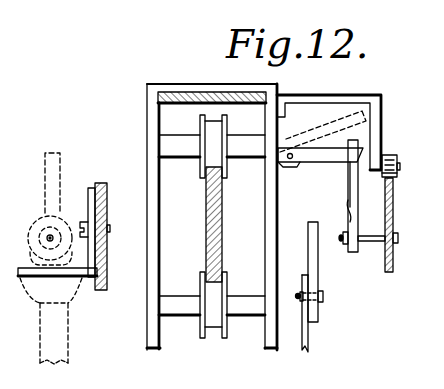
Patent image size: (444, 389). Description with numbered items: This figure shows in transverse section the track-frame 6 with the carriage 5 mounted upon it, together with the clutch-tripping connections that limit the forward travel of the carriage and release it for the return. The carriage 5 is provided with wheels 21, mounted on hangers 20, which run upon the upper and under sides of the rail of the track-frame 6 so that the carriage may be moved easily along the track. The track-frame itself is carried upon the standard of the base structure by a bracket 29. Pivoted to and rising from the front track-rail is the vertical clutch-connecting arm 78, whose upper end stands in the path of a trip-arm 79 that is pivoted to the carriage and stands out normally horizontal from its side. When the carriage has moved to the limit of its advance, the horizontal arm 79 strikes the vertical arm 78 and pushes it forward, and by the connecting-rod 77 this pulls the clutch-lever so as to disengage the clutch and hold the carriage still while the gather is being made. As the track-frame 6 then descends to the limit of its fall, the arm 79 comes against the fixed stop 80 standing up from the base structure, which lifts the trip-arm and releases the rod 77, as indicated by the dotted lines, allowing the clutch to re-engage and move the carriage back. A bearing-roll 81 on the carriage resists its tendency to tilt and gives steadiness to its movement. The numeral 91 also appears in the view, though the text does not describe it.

The carriage 5 is at (186, 99).
The hangers 20 is at (155, 246).
The wheels 21 is at (212, 133).
The track-frame 6 is at (223, 212).
The connecting-rod 77 is at (352, 177).
The clutch-connecting arm 78 is at (348, 205).
The trip-arm 79 is at (323, 152).
The stop 80 is at (312, 262).
The bearing-roll 81 is at (400, 168).
The dashed rod 91 is at (30, 161).
The bracket 29 is at (25, 273).